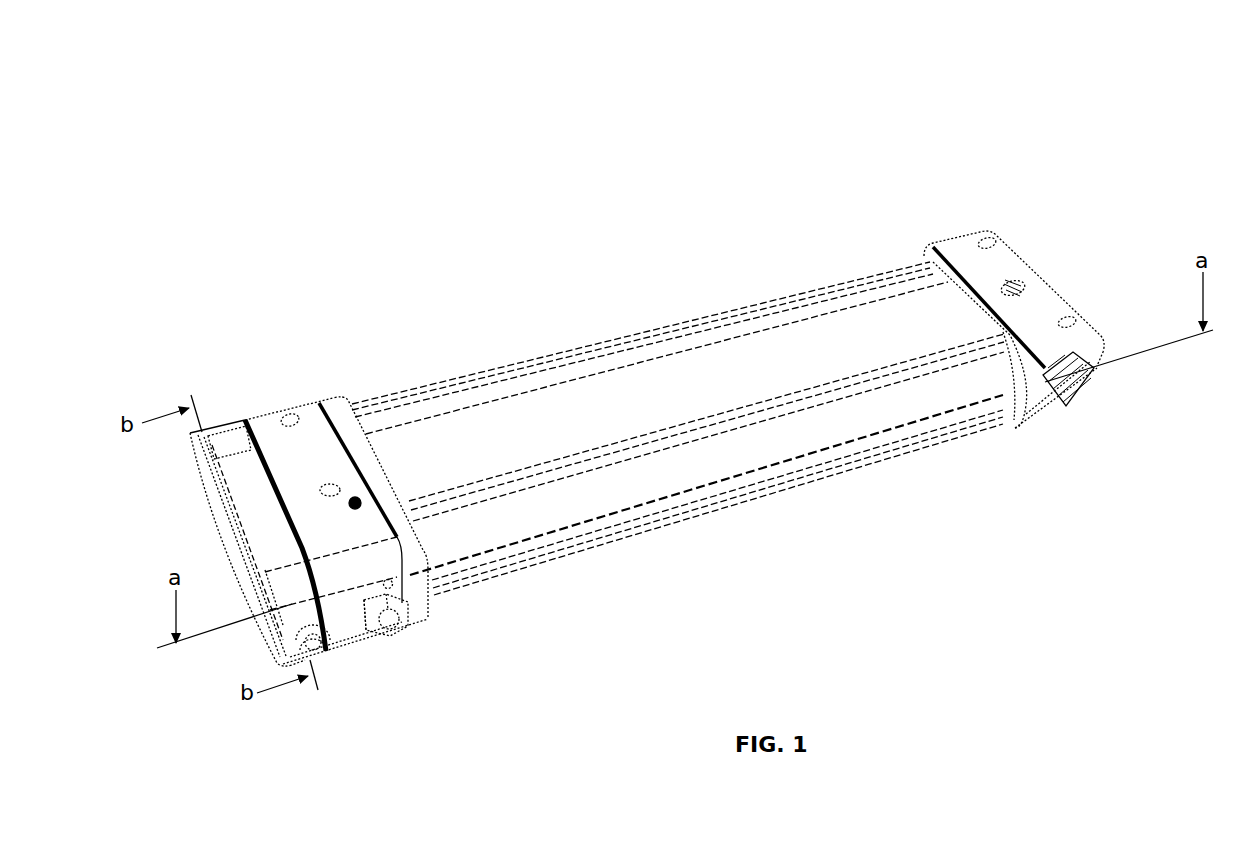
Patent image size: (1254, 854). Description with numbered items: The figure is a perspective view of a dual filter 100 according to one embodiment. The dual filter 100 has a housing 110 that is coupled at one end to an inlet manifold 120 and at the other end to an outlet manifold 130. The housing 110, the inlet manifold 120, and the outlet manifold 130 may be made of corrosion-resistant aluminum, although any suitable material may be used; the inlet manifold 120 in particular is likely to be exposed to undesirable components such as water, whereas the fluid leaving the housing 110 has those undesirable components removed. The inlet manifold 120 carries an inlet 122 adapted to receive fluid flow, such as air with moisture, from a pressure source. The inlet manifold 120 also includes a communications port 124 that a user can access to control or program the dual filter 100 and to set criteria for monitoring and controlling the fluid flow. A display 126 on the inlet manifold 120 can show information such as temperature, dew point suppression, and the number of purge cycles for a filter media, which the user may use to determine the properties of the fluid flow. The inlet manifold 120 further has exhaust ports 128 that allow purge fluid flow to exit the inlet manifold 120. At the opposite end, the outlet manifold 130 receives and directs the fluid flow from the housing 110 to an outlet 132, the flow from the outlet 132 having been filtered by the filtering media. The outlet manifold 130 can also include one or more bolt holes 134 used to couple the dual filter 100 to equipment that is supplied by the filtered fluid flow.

The dual filter 100 is at (860, 119).
The housing 110 is at (677, 323).
The inlet manifold 120 is at (234, 422).
The inlet 122 is at (390, 623).
The communications port 124 is at (314, 643).
The display 126 is at (232, 443).
The exhaust ports 128 is at (389, 585).
The outlet manifold 130 is at (957, 243).
The outlet 132 is at (1070, 386).
The bolt holes 134 is at (330, 489).